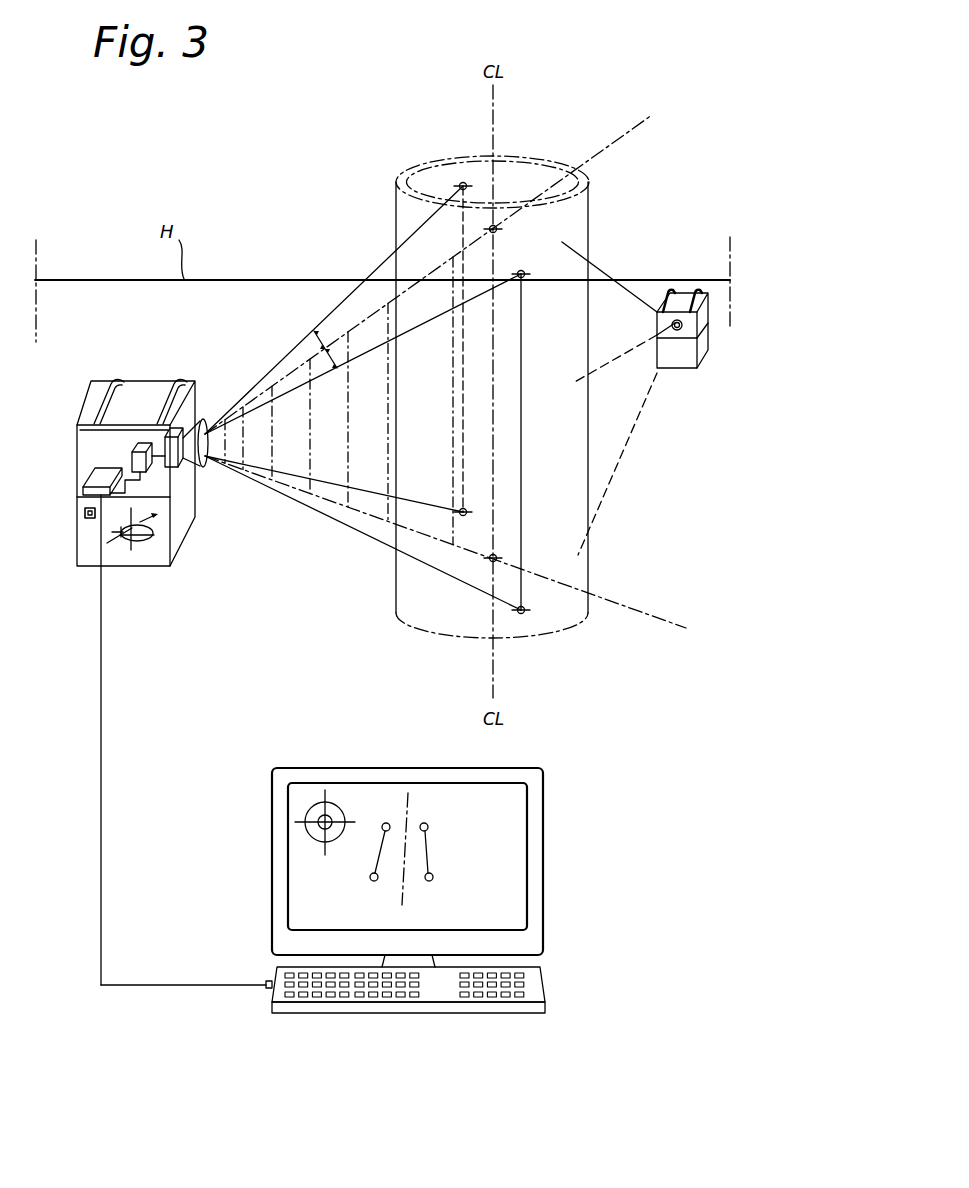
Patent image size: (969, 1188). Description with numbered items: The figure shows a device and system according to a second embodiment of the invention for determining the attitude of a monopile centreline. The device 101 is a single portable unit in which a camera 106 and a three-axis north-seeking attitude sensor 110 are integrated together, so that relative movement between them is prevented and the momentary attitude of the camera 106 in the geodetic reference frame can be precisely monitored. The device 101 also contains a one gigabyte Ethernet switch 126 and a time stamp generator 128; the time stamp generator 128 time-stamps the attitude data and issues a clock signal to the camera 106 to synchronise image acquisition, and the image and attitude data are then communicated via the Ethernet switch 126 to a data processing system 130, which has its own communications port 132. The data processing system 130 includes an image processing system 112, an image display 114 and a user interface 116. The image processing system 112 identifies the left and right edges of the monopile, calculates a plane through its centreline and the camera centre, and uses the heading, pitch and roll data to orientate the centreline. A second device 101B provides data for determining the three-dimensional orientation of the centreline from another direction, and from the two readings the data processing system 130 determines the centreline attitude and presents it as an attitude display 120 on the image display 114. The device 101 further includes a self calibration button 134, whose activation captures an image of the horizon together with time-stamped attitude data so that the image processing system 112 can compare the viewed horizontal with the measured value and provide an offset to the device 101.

The device 101 is at (120, 360).
The second device 101B is at (700, 352).
The camera 106 is at (187, 420).
The 3-axis north-seeking attitude sensor 110 is at (138, 546).
The image processing system 112 is at (536, 912).
The image display 114 is at (313, 867).
The user interface 116 is at (533, 990).
The attitude display 120 is at (308, 813).
The 1 GB Ethernet switch 126 is at (93, 470).
The time stamp generator 128 is at (141, 460).
The data processing system 130 is at (565, 794).
The communications port 132 is at (268, 989).
The self calibration button 134 is at (88, 521).